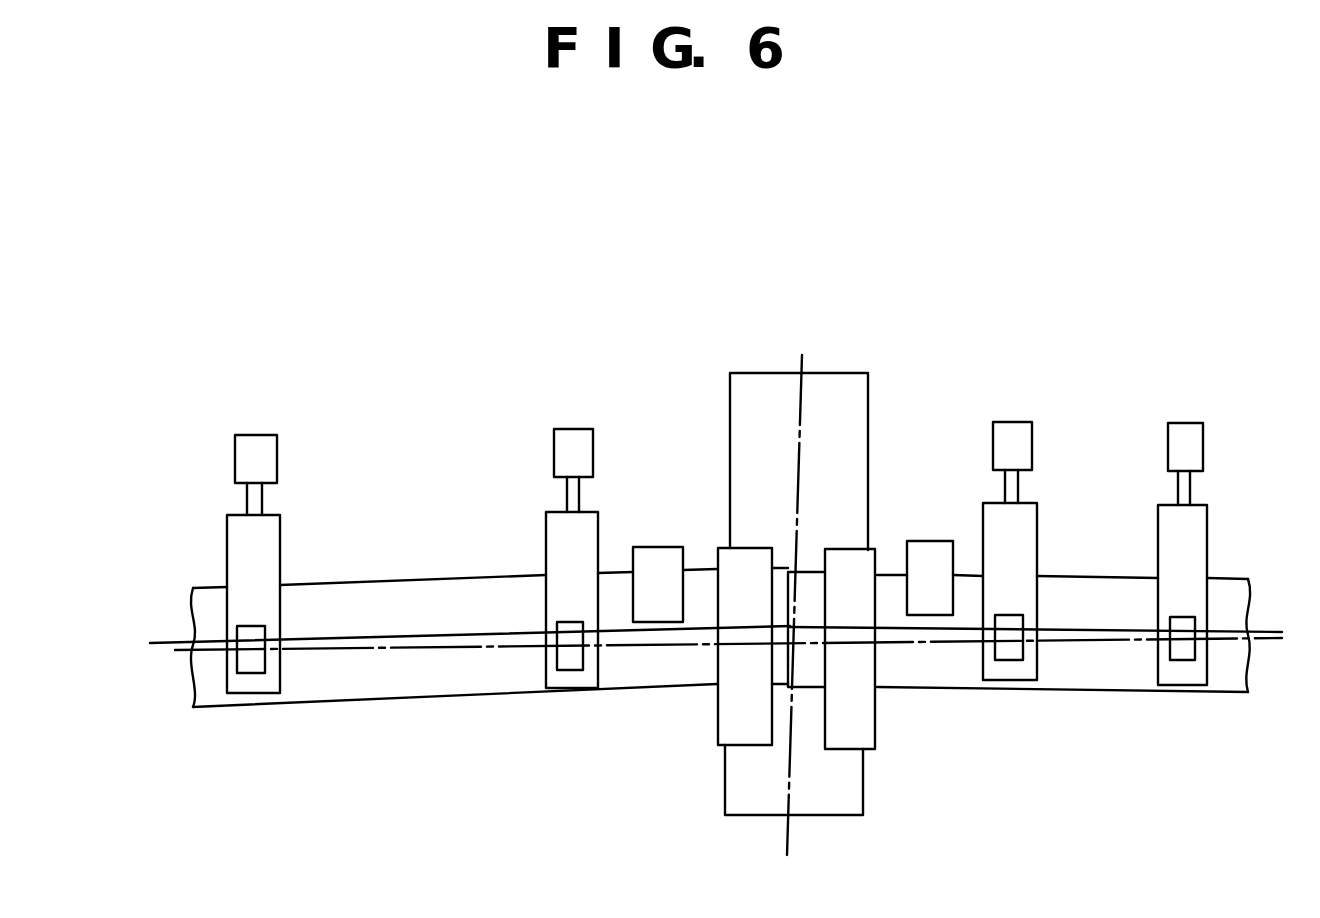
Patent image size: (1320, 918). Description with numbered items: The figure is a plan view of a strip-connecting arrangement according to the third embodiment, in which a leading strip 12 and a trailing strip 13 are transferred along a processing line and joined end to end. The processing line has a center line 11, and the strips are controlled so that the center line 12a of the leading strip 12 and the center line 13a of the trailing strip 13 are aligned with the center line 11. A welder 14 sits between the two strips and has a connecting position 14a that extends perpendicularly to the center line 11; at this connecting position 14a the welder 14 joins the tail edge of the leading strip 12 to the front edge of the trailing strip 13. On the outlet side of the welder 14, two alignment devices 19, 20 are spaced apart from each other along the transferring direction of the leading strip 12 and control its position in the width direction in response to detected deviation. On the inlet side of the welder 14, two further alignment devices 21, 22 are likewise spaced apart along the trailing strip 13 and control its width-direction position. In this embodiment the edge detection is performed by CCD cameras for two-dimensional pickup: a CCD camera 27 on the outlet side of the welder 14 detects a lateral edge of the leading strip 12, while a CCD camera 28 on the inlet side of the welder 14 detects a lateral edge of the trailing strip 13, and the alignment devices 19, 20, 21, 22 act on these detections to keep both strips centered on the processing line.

The center line of processing line 11 is at (483, 647).
The leading strip 12 is at (1075, 690).
The center line of leading strip 12a is at (1087, 630).
The trailing strip 13 is at (355, 700).
The center line of trailing strip 13a is at (408, 636).
The welder 14 is at (840, 373).
The connecting position 14a is at (803, 355).
The alignment device 19 is at (1190, 423).
The alignment device 20 is at (1020, 422).
The alignment device 21 is at (575, 428).
The alignment device 22 is at (260, 436).
The CCD camera 27 is at (933, 541).
The CCD camera 28 is at (663, 547).